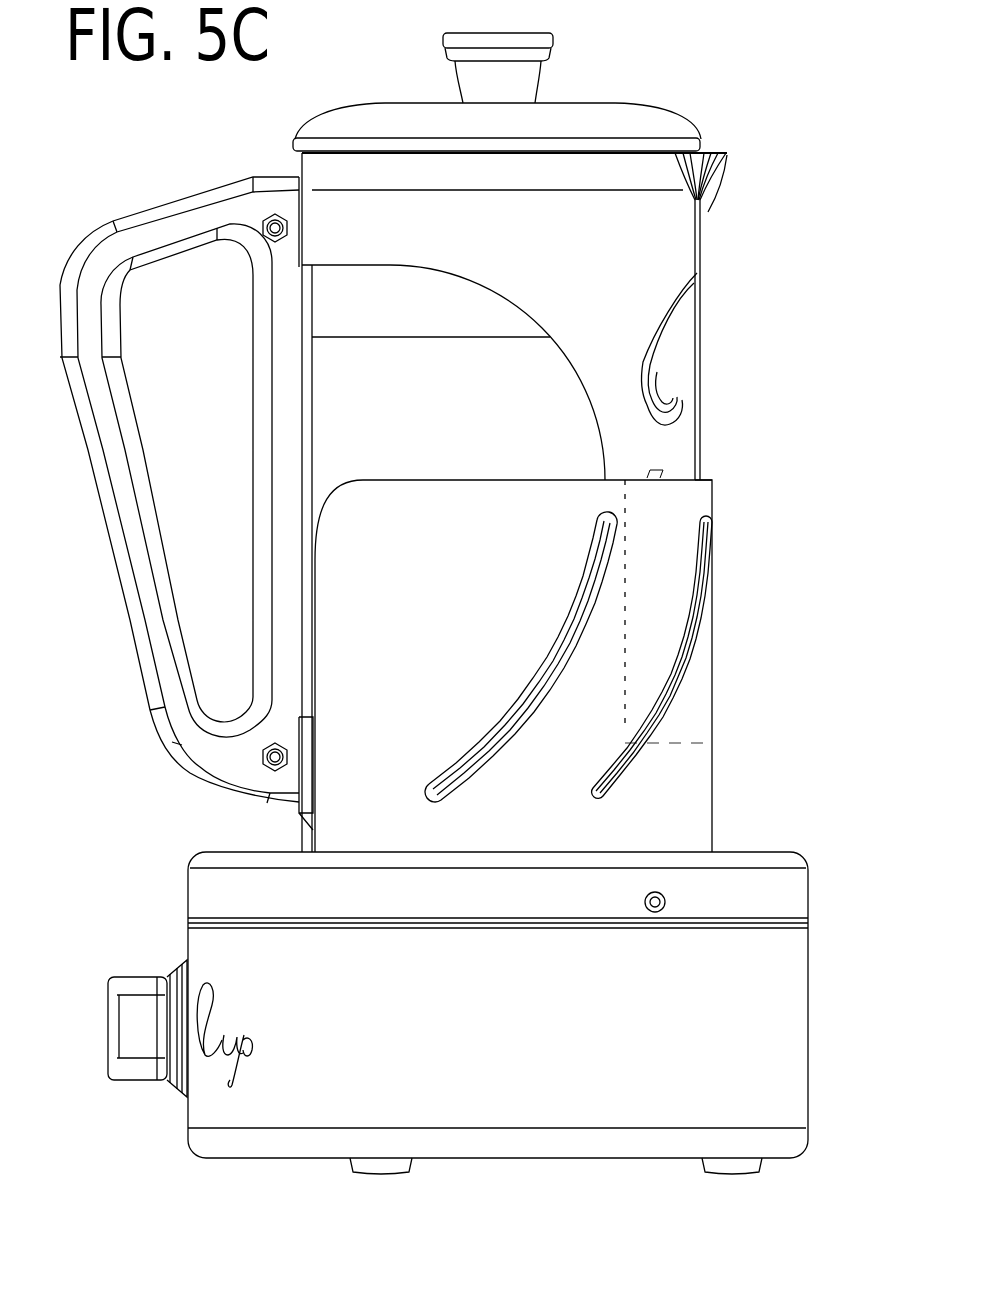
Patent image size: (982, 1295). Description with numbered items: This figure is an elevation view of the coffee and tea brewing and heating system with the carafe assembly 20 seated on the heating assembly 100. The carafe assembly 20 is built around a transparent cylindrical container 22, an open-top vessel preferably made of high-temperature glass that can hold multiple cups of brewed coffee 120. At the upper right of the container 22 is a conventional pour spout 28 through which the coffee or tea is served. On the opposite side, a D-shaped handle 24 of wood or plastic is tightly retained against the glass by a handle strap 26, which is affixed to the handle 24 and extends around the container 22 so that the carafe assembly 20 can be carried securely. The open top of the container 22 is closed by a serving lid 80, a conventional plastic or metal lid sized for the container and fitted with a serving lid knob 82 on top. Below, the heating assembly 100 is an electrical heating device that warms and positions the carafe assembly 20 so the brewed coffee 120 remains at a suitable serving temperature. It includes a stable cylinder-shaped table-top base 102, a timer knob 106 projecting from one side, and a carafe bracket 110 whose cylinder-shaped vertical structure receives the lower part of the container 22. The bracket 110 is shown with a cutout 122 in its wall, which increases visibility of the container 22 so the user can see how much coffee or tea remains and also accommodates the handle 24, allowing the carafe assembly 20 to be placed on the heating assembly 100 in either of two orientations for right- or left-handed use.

The carafe assembly 20 is at (745, 383).
The container 22 is at (398, 318).
The handle 24 is at (152, 711).
The handle strap 26 is at (342, 212).
The pour spout 28 is at (712, 170).
The serving lid 80 is at (416, 115).
The serving lid knob 82 is at (552, 53).
The heating assembly 100 is at (420, 1022).
The table-top base 102 is at (218, 1146).
The timer knob 106 is at (150, 975).
The carafe bracket 110 is at (455, 626).
The brewed coffee 120 is at (465, 439).
The cutout 122 is at (625, 567).